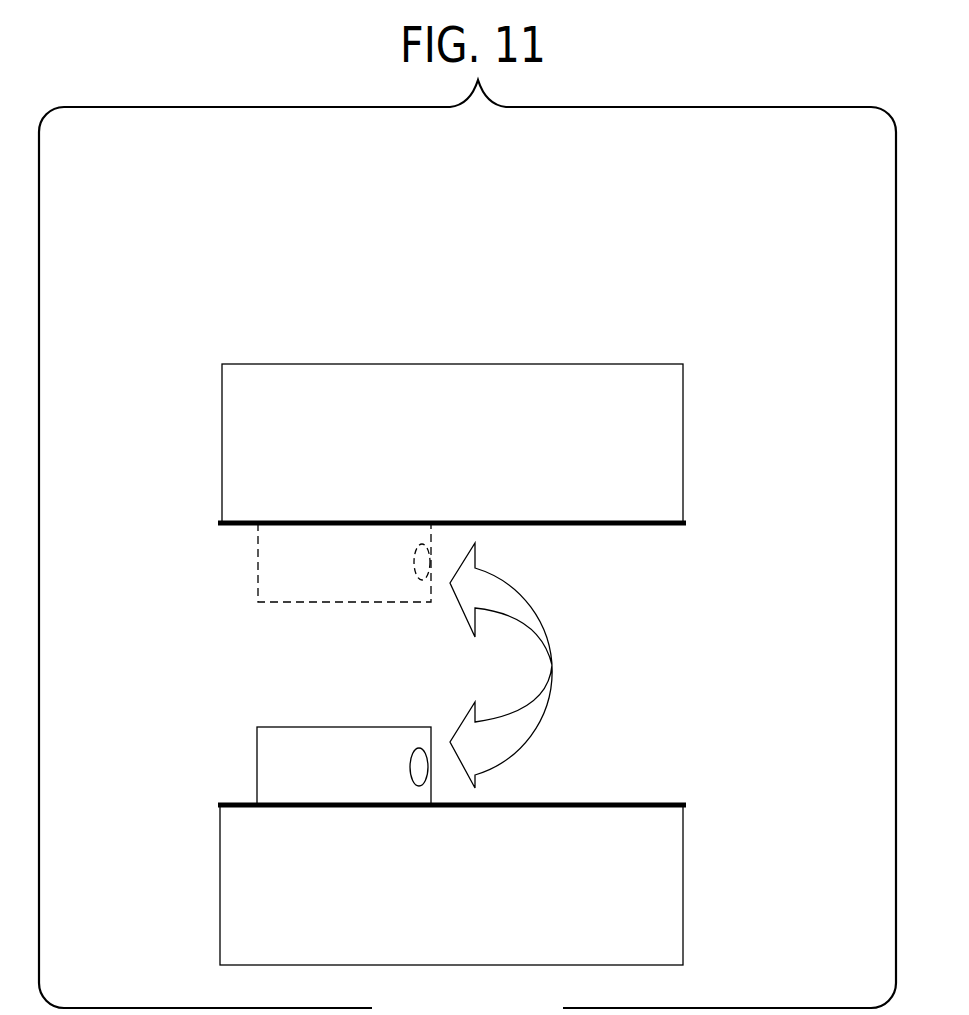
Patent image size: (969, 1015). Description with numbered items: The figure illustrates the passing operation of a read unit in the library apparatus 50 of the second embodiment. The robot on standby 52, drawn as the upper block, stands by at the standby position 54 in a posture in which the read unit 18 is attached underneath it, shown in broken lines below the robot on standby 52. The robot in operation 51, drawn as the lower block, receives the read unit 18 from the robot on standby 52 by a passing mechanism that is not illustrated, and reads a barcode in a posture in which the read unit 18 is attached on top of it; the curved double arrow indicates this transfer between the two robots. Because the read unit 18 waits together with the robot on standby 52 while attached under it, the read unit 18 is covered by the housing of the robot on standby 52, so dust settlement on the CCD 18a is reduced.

The ion generating element 50 is at (740, 272).
The robot in operation 51 is at (220, 866).
The robot on standby 52 is at (222, 418).
The standby position 54 is at (712, 462).
The read unit 18 is at (257, 757).
The CCD 18a is at (420, 580).